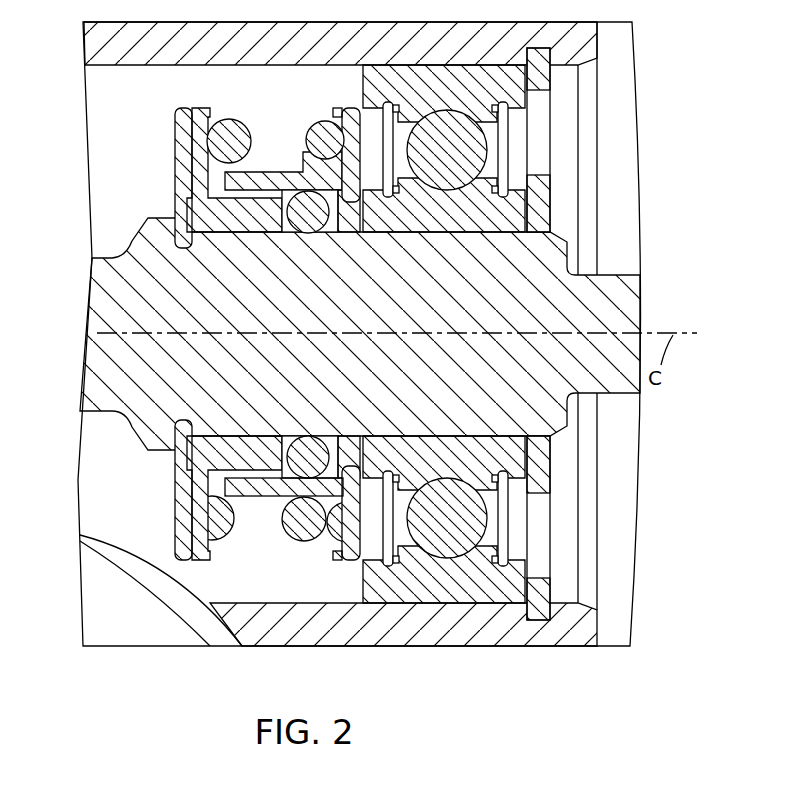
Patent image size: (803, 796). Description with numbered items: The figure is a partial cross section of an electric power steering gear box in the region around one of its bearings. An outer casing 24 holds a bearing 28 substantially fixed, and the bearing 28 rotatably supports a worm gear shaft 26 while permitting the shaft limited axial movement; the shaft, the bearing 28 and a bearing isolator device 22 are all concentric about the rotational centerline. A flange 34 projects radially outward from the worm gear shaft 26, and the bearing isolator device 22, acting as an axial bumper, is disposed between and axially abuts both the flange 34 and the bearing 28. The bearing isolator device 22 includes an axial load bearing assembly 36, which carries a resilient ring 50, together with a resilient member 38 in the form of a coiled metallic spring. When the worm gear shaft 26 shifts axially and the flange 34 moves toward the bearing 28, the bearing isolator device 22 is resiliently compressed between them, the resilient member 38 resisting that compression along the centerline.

The bearing isolator device 22 is at (652, 68).
The outer casing 24 is at (557, 648).
The worm gear shaft 26 is at (97, 383).
The bearing 28 is at (432, 598).
The flange 34 is at (157, 433).
The axial load bearing assembly 36 is at (170, 122).
The resilient member 38 is at (297, 529).
The resilient ring 50 is at (277, 494).